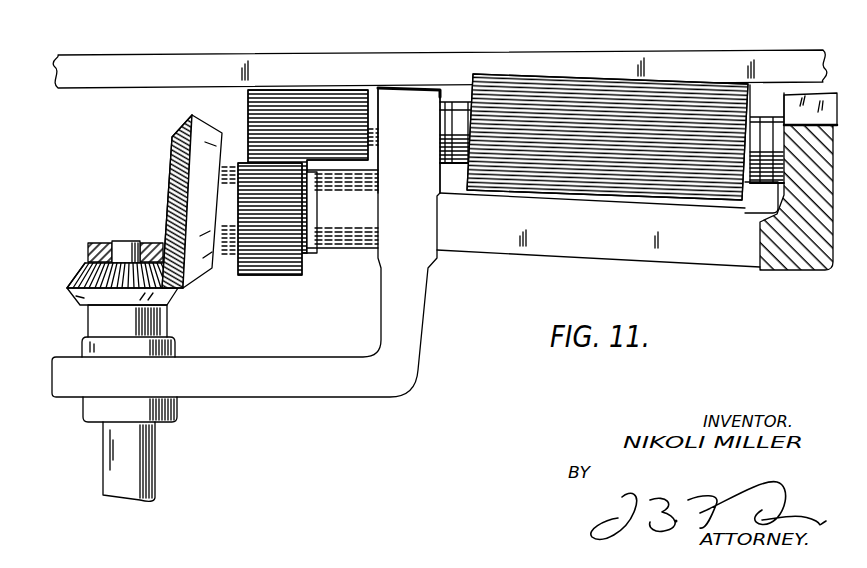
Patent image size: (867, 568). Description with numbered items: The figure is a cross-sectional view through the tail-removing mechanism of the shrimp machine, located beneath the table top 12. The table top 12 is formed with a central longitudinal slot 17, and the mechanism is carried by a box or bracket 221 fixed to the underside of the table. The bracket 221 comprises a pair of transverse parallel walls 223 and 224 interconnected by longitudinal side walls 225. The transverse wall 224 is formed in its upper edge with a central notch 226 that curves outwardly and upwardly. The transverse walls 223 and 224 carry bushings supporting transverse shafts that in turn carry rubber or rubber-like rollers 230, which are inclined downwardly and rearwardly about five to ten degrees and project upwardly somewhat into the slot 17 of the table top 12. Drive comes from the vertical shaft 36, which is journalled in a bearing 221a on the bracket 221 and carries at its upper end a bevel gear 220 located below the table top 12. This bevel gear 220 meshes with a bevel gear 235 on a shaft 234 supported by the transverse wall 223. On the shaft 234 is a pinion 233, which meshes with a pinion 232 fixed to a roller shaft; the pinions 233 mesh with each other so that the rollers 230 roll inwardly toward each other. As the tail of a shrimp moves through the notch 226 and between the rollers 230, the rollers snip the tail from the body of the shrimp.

The table top wall 12 is at (675, 18).
The central longitudinal slot 17 is at (173, 70).
The vertical shaft 36 is at (148, 465).
The bevel gear 220 is at (82, 281).
The bracket 221 is at (433, 347).
The bearing 221a is at (178, 345).
The transverse wall 223 is at (403, 98).
The transverse wall 224 is at (797, 188).
The longitudinal side walls 225 is at (650, 247).
The central notch 226 is at (831, 93).
The rubber rollers 230 is at (548, 92).
The pinion 232 is at (292, 103).
The pinion 233 is at (275, 263).
The shaft 234 is at (345, 238).
The bevel gear 235 is at (170, 147).